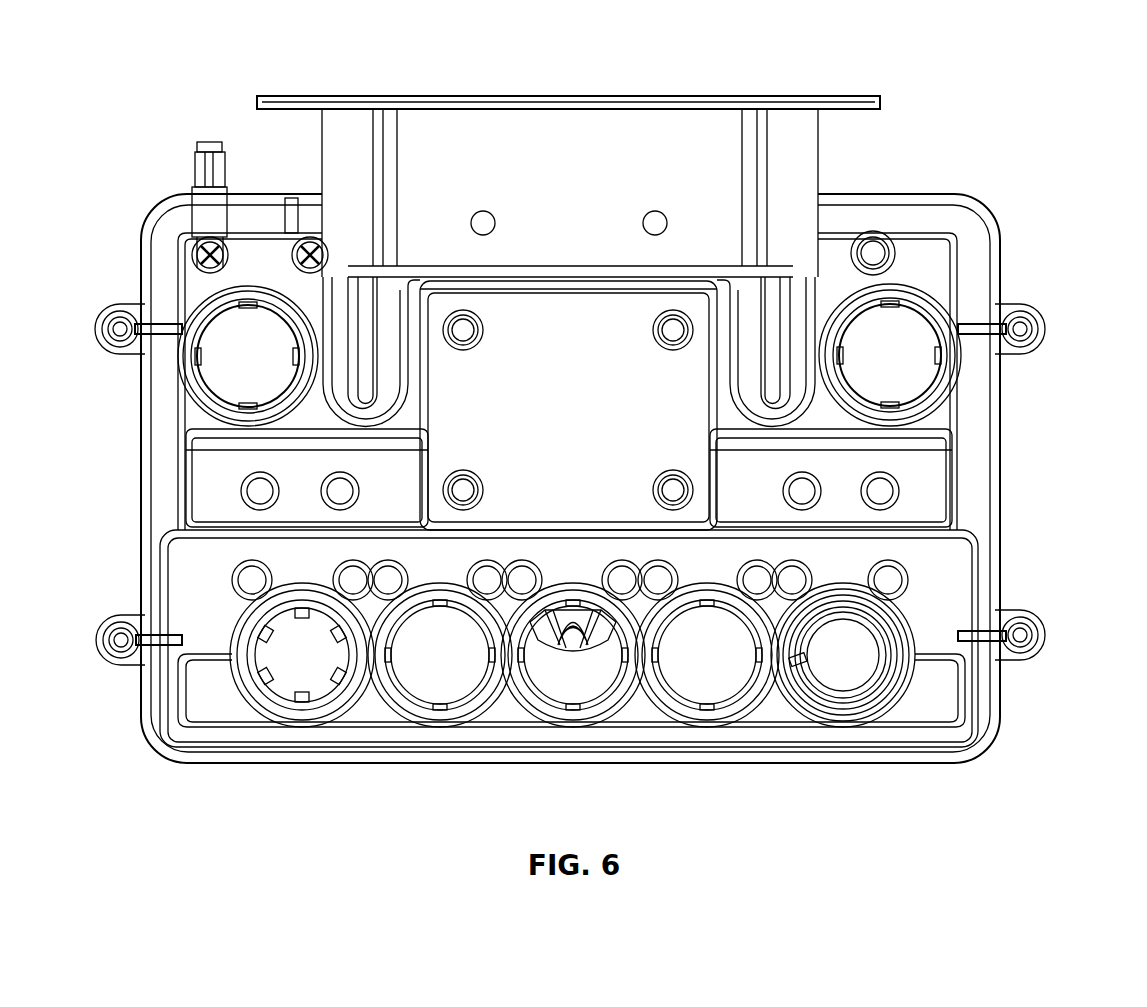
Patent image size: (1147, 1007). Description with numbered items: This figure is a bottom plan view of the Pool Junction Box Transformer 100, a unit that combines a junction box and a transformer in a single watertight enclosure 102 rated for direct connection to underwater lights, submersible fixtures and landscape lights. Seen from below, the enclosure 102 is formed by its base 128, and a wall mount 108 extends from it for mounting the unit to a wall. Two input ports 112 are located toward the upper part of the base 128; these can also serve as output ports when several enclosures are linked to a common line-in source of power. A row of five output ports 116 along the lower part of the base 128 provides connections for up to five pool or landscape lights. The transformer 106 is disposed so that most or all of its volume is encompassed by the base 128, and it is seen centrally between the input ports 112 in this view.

The Pool Junction Box Transformer 100 is at (150, 78).
The enclosure 102 is at (993, 517).
The transformer 106 is at (568, 405).
The wall mount 108 is at (562, 165).
The input ports 112 is at (243, 372).
The output ports 116 is at (302, 658).
The base 128 is at (933, 697).